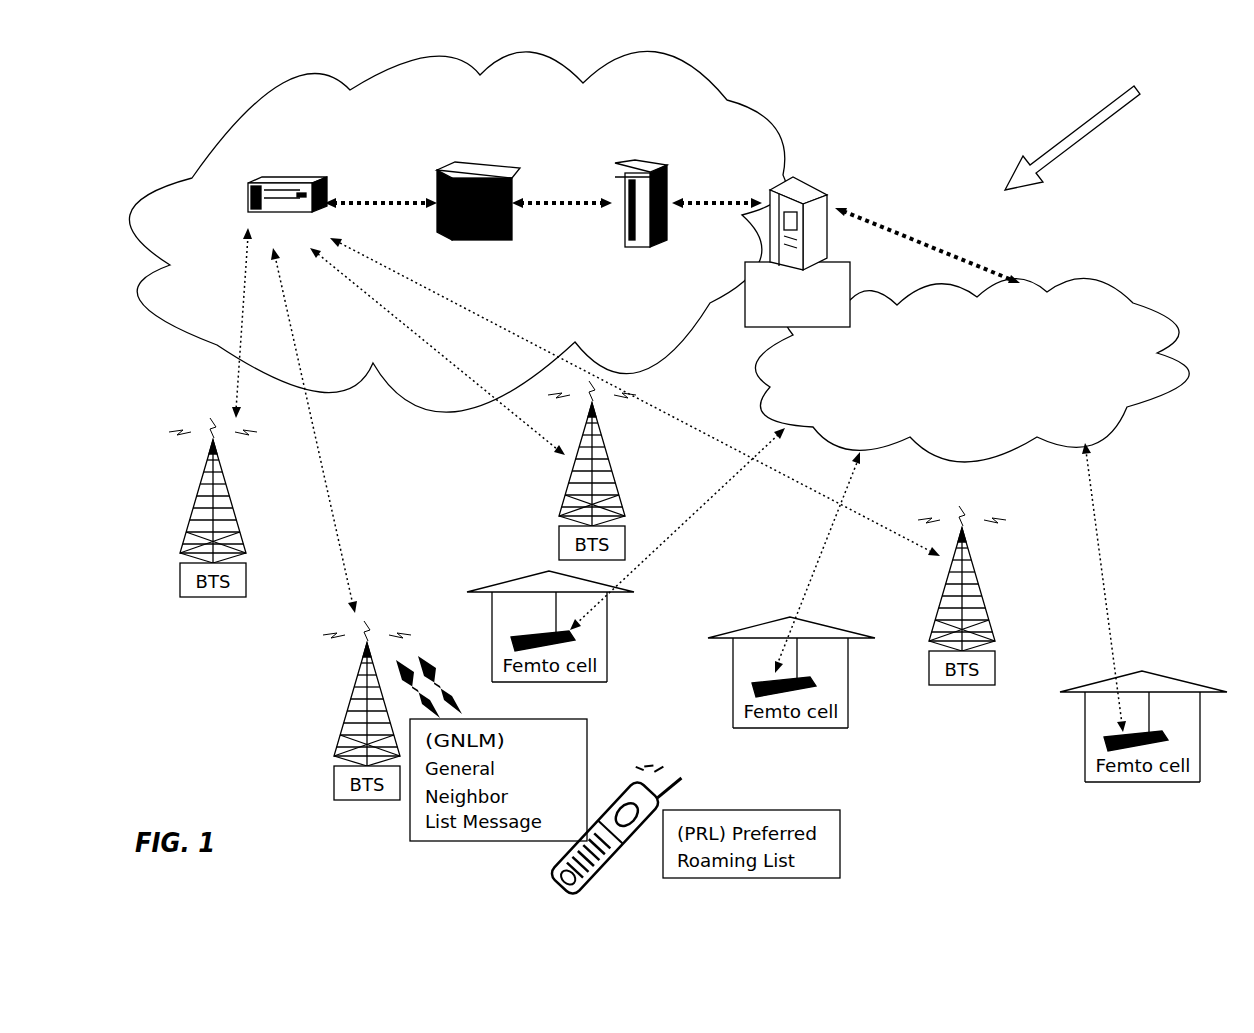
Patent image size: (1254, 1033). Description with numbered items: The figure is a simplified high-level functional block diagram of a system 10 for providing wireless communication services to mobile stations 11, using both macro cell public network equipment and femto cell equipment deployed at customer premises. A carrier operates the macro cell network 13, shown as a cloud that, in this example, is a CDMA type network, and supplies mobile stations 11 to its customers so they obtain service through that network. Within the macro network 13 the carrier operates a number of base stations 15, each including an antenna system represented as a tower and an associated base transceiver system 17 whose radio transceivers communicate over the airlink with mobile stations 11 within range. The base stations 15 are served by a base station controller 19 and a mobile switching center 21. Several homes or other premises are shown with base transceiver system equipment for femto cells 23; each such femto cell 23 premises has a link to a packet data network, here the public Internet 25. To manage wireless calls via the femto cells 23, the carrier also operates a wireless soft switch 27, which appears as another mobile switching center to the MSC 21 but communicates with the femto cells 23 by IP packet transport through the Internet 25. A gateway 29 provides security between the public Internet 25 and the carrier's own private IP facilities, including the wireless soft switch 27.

The system 10 is at (1087, 132).
The mobile station 11 is at (626, 823).
The macro cell network 13 is at (479, 231).
The base station 15 is at (616, 573).
The base transceiver system (BTS) 17 is at (631, 649).
The base station controller (BSC) 19 is at (297, 177).
The mobile switching center (MSC) 21 is at (520, 177).
The femto cell 23 is at (835, 676).
The Internet 25 is at (972, 335).
The wireless soft switch 27 is at (672, 168).
The gateway 29 is at (825, 192).